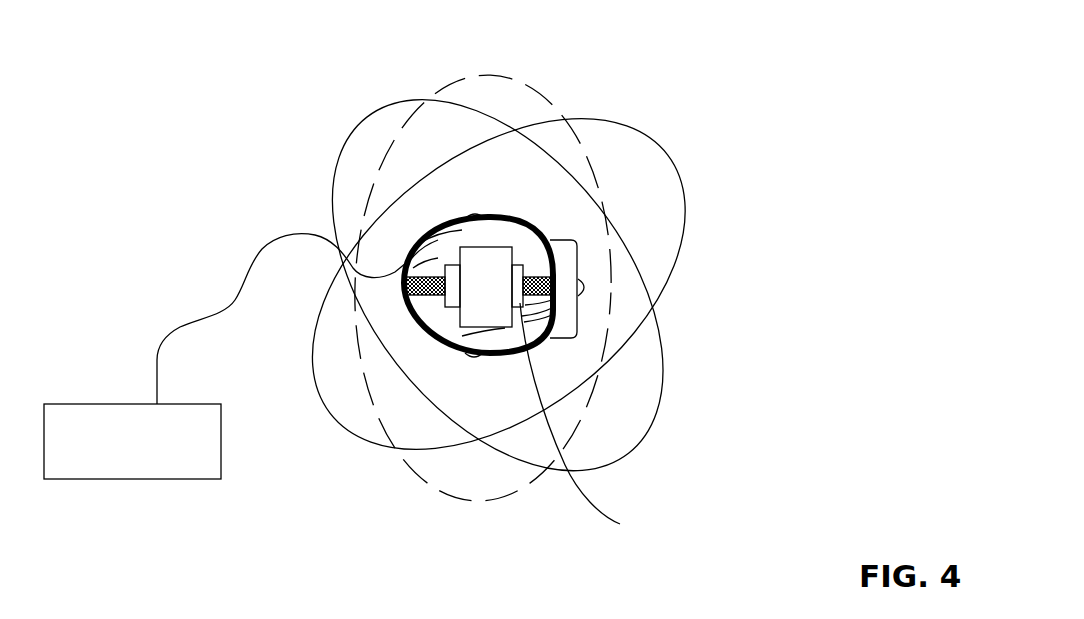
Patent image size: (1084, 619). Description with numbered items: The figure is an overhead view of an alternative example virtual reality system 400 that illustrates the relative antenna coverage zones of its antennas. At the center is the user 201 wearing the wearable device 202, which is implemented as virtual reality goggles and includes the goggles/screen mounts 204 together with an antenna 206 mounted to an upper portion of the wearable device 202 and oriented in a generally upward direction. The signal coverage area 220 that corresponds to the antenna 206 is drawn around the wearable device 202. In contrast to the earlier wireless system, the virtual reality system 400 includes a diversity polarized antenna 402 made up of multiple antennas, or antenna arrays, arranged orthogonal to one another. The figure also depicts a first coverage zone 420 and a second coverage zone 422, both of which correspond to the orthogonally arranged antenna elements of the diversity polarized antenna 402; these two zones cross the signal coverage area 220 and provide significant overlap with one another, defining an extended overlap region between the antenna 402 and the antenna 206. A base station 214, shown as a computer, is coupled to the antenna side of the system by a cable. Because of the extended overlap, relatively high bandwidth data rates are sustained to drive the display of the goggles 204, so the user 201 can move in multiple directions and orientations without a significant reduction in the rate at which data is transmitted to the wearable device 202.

The virtual reality system 400 is at (728, 72).
The user 201 is at (528, 324).
The wearable device 202 is at (505, 208).
The goggles/screen mounts 204 is at (578, 266).
The antenna 206 is at (596, 422).
The base station 214 is at (73, 480).
The signal coverage area 220 is at (482, 70).
The diversity polarized antenna 402 is at (477, 302).
The first coverage zone 420 is at (313, 353).
The second coverage zone 422 is at (637, 443).